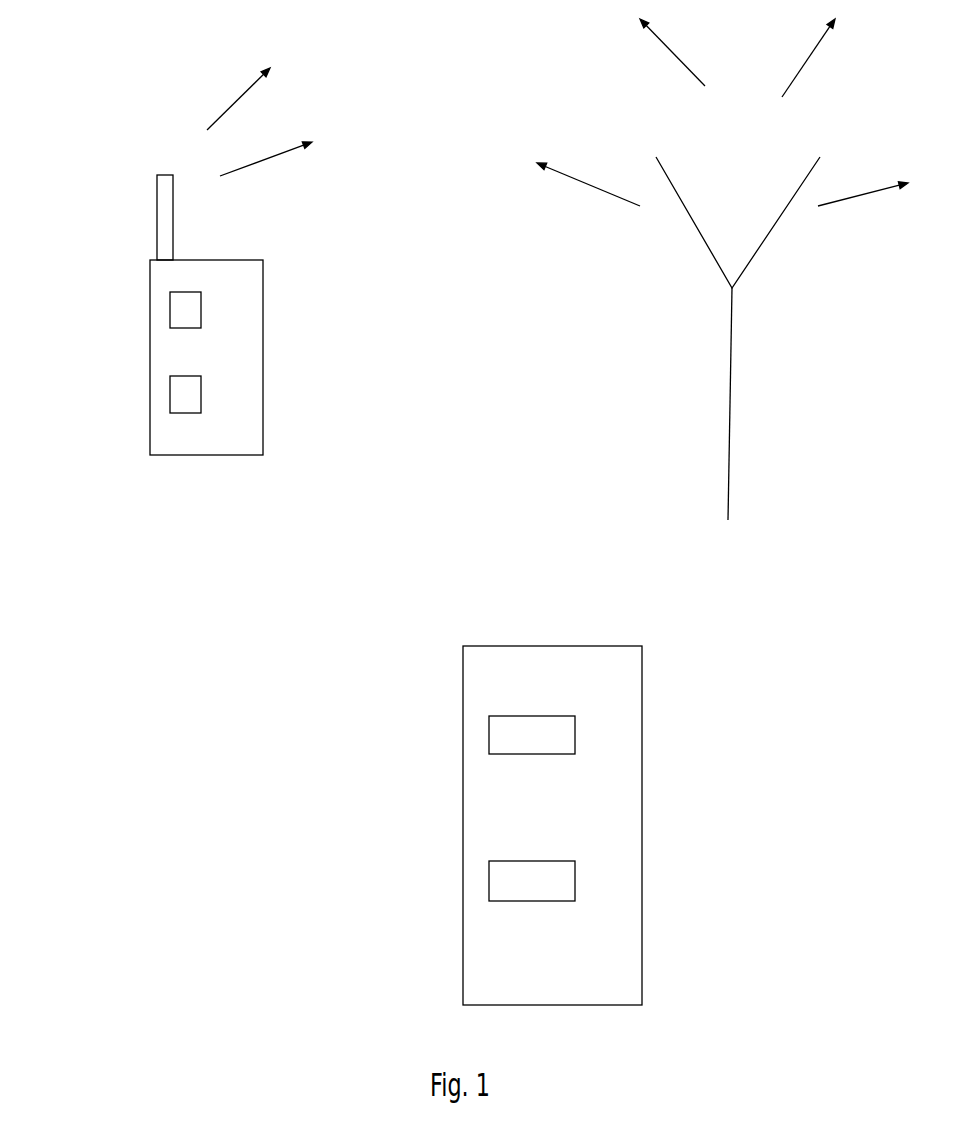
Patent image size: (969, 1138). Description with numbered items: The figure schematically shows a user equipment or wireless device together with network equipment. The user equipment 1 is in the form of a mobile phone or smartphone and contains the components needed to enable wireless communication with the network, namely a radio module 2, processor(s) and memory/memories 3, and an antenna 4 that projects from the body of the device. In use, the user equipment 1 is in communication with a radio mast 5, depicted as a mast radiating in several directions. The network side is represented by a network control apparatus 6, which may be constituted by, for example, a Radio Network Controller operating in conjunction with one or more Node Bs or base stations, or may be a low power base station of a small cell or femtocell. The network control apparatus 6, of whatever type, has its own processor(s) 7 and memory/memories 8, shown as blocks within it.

The user equipment 1 is at (263, 347).
The radio module 2 is at (170, 300).
The processor(s) and memory/memories 3 is at (170, 392).
The antenna 4 is at (157, 203).
The radio mast 5 is at (732, 375).
The network control apparatus 6 is at (642, 780).
The processor(s) 7 is at (489, 738).
The memory/memories 8 is at (489, 878).